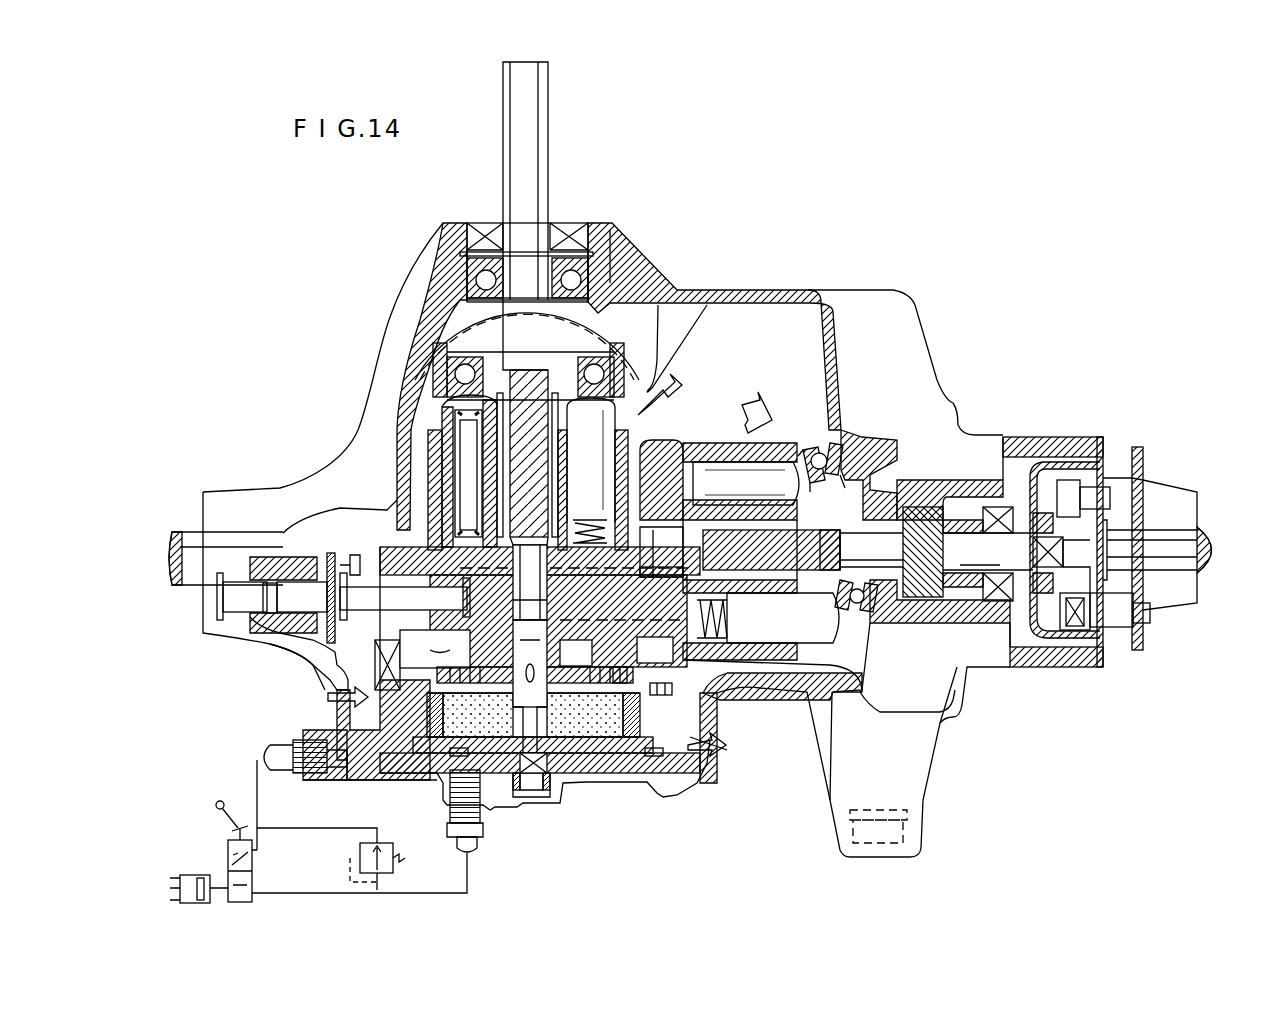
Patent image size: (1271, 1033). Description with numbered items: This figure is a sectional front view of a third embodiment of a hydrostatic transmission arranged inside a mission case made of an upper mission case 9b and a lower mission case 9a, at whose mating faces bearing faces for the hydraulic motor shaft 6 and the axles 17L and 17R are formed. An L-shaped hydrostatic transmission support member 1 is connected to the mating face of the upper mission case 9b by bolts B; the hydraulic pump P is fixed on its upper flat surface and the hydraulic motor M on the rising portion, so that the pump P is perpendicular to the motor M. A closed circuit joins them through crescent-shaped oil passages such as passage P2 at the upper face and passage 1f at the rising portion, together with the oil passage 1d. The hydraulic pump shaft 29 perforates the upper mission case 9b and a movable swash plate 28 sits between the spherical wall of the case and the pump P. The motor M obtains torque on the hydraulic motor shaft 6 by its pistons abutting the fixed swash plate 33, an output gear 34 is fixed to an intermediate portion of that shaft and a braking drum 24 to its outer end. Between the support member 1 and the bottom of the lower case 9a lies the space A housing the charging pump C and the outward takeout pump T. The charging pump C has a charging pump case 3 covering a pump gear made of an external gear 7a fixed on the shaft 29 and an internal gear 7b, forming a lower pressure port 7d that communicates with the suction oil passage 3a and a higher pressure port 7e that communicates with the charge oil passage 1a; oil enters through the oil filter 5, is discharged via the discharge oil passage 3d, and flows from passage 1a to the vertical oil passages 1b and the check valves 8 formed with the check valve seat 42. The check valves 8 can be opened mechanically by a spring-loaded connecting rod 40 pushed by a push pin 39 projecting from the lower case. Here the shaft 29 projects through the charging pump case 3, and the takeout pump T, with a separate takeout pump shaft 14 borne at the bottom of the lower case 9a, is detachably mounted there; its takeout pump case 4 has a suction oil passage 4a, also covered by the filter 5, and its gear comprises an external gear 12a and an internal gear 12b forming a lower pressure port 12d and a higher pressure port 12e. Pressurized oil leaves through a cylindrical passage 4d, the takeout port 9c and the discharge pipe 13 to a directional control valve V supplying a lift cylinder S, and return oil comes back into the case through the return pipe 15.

The hydraulic pump shaft 29 is at (549, 163).
The movable swash plate 28 is at (494, 380).
The upper mission case 9b is at (374, 380).
The right axle 17R is at (192, 530).
The push pin 39 is at (242, 575).
The check valve seat 42 is at (352, 560).
The connecting rod 40 is at (314, 661).
The check valve 8 is at (352, 637).
The charge oil passage 1a is at (422, 660).
The vertical oil passage 1b is at (430, 645).
The crescent-shaped oil passage P2 is at (575, 614).
The lower pressure port 7d is at (549, 595).
The external gear 7a is at (591, 654).
The oil passage 1d is at (655, 649).
The crescent-shaped oil passage 1f is at (668, 505).
The hydrostatic transmission support member 1 is at (676, 440).
The fixed swash plate 33 is at (838, 470).
The output gear 34 is at (940, 478).
The hydraulic motor shaft 6 is at (904, 556).
The braking drum 24 is at (1054, 670).
The left axle 17L is at (1210, 590).
The charging pump C is at (330, 703).
The charging pump case 3 is at (396, 690).
The oil filter 5 is at (428, 723).
The higher pressure port 7e is at (533, 715).
The suction oil passage 4a is at (585, 715).
The outward takeout pump case 4 is at (660, 695).
The suction oil passage 3a is at (640, 690).
The bolt B is at (712, 695).
The outward takeout pump T is at (719, 737).
The lower mission case 9a is at (708, 770).
The return pipe 15 is at (282, 775).
The discharge oil passage 3d is at (326, 776).
The space A is at (370, 799).
The internal gear 7b is at (430, 850).
The cylindrical passage 4d is at (455, 850).
The discharge pipe 13 is at (478, 845).
The takeout pump shaft 14 is at (525, 795).
The takeout port 9c is at (535, 832).
The external gear 12a is at (582, 790).
The lower pressure port 12d is at (620, 792).
The internal gear 12b is at (675, 792).
The higher pressure port 12e is at (556, 829).
The directional control valve V is at (226, 851).
The lift cylinder S is at (206, 905).
The hydraulic pump P is at (559, 462).
The hydraulic motor M is at (665, 462).